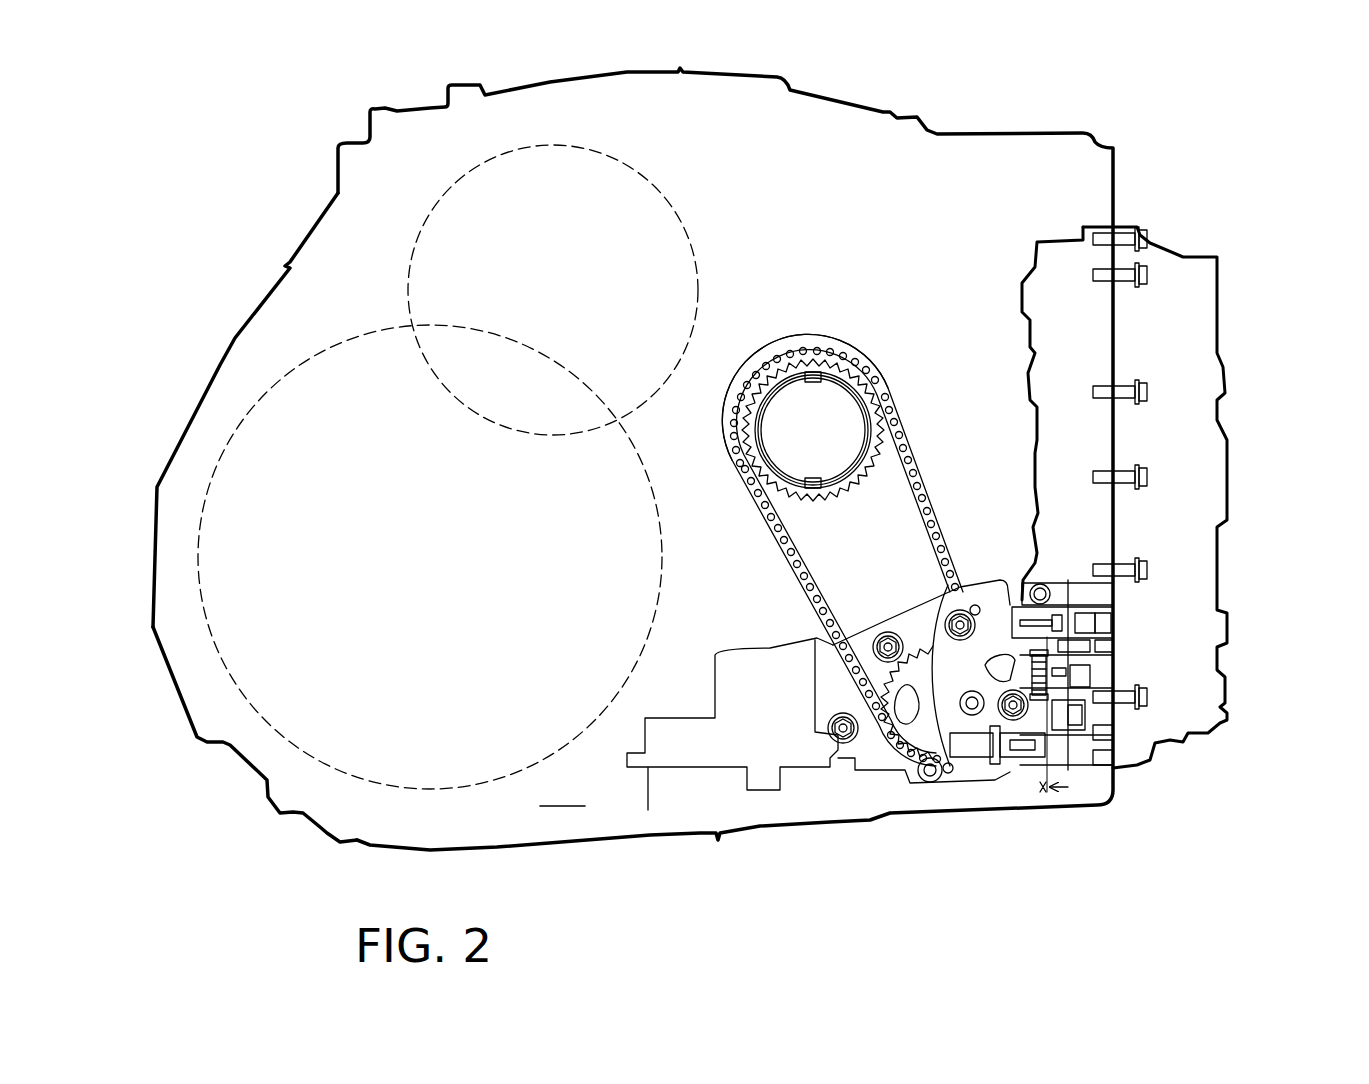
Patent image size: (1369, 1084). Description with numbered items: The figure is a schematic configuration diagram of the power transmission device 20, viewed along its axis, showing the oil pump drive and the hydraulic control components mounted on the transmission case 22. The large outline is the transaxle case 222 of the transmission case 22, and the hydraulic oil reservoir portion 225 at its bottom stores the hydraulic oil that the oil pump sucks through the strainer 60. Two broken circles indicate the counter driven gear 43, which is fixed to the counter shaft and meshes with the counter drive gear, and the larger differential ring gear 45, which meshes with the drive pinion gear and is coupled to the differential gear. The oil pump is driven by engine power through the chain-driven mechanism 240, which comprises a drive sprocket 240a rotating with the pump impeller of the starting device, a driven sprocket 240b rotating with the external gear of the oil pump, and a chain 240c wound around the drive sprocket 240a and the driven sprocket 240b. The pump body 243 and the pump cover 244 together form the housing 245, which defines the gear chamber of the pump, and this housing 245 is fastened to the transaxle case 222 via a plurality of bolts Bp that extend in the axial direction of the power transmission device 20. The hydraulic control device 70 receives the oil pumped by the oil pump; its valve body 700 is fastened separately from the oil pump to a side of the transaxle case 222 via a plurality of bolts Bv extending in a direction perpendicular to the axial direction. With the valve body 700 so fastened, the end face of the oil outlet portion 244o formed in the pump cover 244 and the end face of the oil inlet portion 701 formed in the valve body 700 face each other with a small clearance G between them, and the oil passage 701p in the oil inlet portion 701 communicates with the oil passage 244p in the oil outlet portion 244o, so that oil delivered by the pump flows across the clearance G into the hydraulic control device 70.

The power transmission device 20 is at (240, 170).
The transmission case 22 is at (236, 752).
The transaxle case 222 is at (226, 356).
The hydraulic oil reservoir portion 225 is at (562, 791).
The counter driven gear 43 is at (463, 170).
The differential ring gear 45 is at (198, 545).
The strainer 60 is at (727, 763).
The hydraulic control device 70 is at (1221, 287).
The valve body 700 is at (1190, 587).
The oil inlet portion 701 is at (1053, 693).
The oil passage 701p is at (1060, 675).
The chain-driven mechanism 240 is at (907, 420).
The drive sprocket 240a is at (828, 502).
The driven sprocket 240b is at (933, 648).
The chain 240c is at (800, 352).
The pump body 243 is at (873, 753).
The pump cover 244 is at (967, 767).
The oil outlet portion 244o is at (1027, 772).
The oil passage 244p is at (1018, 670).
The housing 245 is at (952, 895).
The bolts Bp is at (833, 724).
The bolts Bv is at (1147, 393).
The clearance G is at (1070, 719).